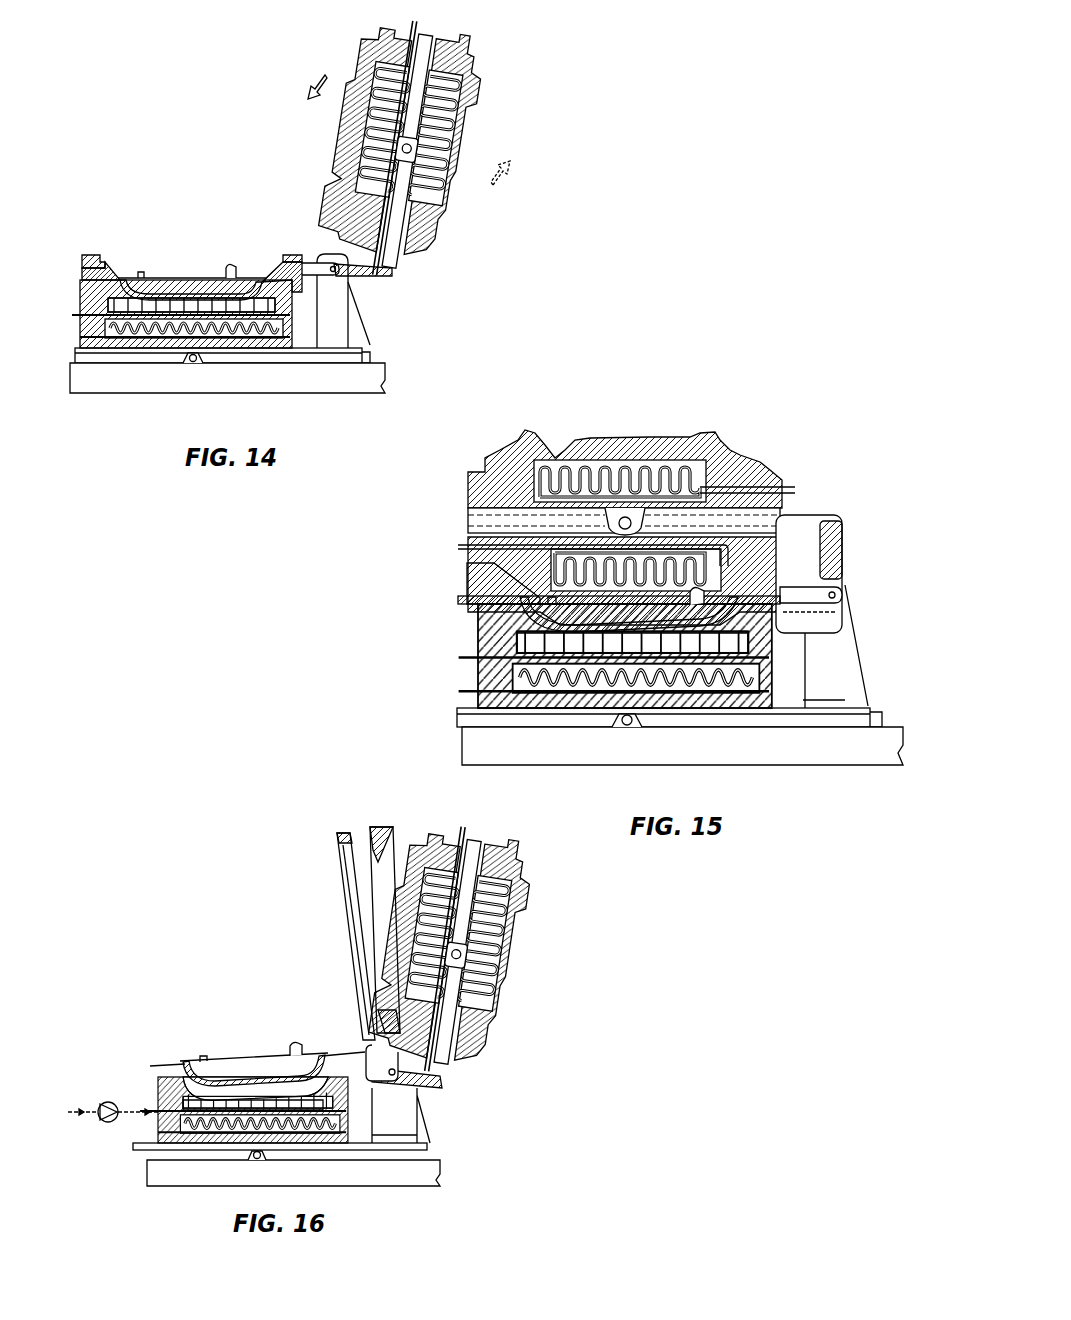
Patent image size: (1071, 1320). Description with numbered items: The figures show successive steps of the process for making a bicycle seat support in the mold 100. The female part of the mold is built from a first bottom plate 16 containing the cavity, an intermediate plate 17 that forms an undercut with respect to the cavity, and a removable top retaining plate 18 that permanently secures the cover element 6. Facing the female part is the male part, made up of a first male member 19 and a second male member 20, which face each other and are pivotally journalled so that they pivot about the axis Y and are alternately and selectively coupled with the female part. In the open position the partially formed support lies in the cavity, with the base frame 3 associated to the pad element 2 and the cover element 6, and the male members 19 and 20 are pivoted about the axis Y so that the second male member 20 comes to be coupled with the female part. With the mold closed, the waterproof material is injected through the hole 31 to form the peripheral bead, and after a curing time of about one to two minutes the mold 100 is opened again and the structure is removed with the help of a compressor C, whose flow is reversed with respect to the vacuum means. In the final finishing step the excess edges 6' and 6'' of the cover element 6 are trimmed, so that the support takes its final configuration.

In FIG. 14, the mold 100 is at (164, 108).
In FIG. 15, the mold 100 is at (797, 432).
In FIG. 16, the mold 100 is at (196, 866).
In FIG. 14, the pad element 2 is at (234, 274).
In FIG. 15, the pad element 2 is at (710, 616).
In FIG. 16, the pad element 2 is at (271, 1054).
In FIG. 14, the base frame 3 is at (202, 290).
In FIG. 15, the base frame 3 is at (694, 625).
In FIG. 16, the base frame 3 is at (217, 1060).
In FIG. 14, the cover element 6 is at (191, 266).
In FIG. 15, the cover element 6 is at (632, 722).
In FIG. 16, the cover element 6 is at (253, 1066).
In FIG. 16, the excess edge of the cover 6' is at (155, 1043).
In FIG. 16, the excess edge of the cover 6'' is at (331, 1032).
In FIG. 14, the first bottom plate 16 is at (102, 298).
In FIG. 15, the first bottom plate 16 is at (498, 667).
In FIG. 16, the first bottom plate 16 is at (160, 1128).
In FIG. 14, the intermediate plate 17 is at (86, 278).
In FIG. 15, the intermediate plate 17 is at (478, 605).
In FIG. 16, the intermediate plate 17 is at (336, 838).
In FIG. 14, the removable top retaining plate 18 is at (86, 259).
In FIG. 15, the removable top retaining plate 18 is at (480, 578).
In FIG. 16, the removable top retaining plate 18 is at (377, 840).
In FIG. 14, the first male member 19 is at (390, 58).
In FIG. 15, the first male member 19 is at (516, 456).
In FIG. 16, the first male member 19 is at (519, 872).
In FIG. 14, the second male member 20 is at (467, 79).
In FIG. 15, the second male member 20 is at (760, 550).
In FIG. 16, the second male member 20 is at (437, 854).
In FIG. 15, the hole for resin injection 31 is at (468, 560).
In FIG. 14, the pivot axis Y is at (400, 146).
In FIG. 16, the compressor C is at (106, 1100).